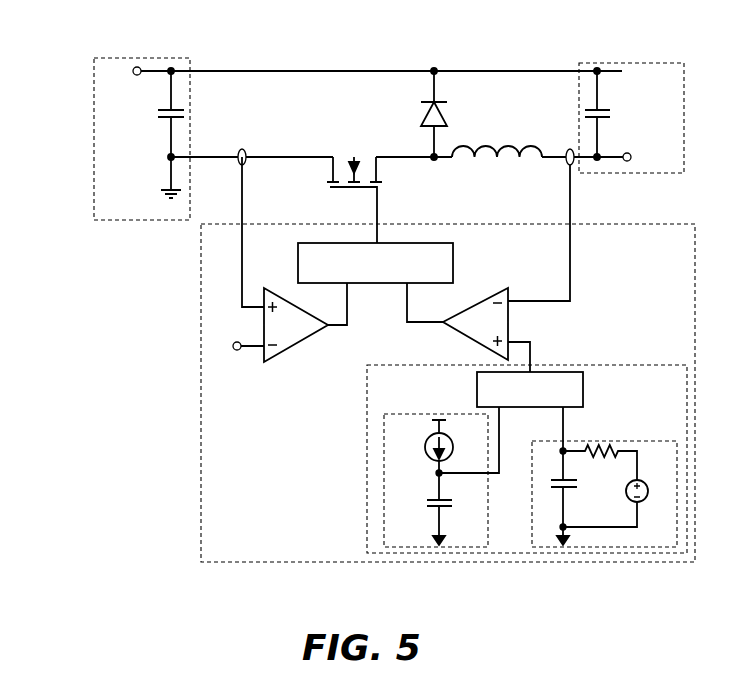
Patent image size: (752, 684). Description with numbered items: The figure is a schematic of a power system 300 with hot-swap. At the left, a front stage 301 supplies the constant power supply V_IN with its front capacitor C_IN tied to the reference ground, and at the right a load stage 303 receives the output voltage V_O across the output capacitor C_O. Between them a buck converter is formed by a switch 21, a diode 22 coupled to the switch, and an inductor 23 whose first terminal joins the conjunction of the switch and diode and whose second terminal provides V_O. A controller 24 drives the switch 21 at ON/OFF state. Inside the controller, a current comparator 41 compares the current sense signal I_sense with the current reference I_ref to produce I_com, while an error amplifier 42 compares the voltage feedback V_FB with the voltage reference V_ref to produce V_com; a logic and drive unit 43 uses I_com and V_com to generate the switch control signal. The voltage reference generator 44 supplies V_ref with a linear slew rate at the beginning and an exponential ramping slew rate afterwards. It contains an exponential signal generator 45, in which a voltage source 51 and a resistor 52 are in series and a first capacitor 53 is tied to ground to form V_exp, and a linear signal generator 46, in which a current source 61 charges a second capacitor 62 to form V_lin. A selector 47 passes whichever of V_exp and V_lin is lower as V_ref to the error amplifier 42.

The power system 300 is at (77, 58).
The input block with input capacitor 301 is at (136, 211).
The output block with output capacitor 303 is at (670, 91).
The switch 21 is at (349, 150).
The diode 22 is at (448, 112).
The inductor 23 is at (500, 141).
The controller 24 is at (243, 550).
The current comparator 41 is at (298, 333).
The error amplifier 42 is at (490, 331).
The logic and drive unit 43 is at (460, 266).
The voltage reference generator 44 is at (400, 394).
The exponential signal generator 45 is at (670, 466).
The linear signal generator 46 is at (412, 535).
The selector 47 is at (587, 397).
The voltage source 51 is at (627, 491).
The resistor 52 is at (594, 456).
The first capacitor 53 is at (553, 489).
The current source 61 is at (452, 452).
The second capacitor 62 is at (458, 505).